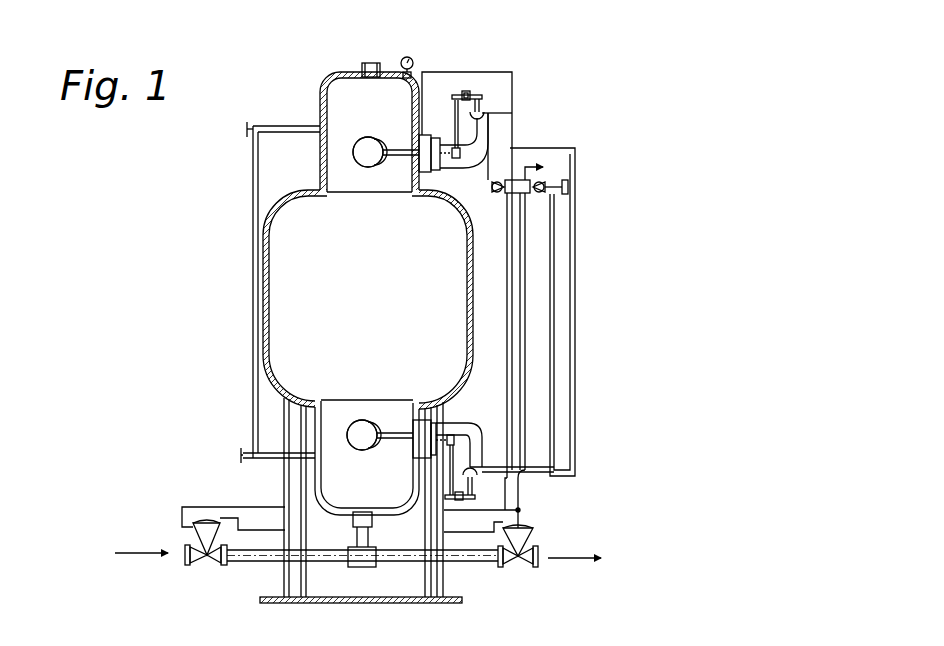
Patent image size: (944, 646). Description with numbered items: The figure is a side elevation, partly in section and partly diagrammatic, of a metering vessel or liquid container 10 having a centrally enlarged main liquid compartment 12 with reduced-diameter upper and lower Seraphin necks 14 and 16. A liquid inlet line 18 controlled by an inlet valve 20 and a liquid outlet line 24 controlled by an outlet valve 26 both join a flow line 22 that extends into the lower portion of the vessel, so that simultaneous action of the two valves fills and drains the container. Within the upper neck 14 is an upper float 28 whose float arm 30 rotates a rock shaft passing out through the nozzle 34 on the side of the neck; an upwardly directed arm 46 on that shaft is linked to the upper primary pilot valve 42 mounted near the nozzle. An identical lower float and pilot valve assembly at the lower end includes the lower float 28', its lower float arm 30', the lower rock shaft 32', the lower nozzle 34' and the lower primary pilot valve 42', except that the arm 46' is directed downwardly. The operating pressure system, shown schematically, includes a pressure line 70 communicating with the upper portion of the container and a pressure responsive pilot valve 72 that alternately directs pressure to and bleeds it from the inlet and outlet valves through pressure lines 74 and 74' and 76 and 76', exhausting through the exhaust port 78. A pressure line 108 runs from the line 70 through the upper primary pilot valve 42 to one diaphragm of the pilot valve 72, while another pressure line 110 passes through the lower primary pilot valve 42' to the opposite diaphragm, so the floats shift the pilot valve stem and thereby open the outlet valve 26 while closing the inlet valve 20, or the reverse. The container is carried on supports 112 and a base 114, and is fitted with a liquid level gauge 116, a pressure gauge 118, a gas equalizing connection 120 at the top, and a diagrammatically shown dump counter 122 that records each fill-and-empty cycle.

The metering vessel 10 is at (381, 276).
The main liquid compartment 12 is at (382, 299).
The upper Seraphin neck 14 is at (322, 88).
The lower Seraphin neck 16 is at (312, 474).
The liquid inlet line 18 is at (136, 550).
The inlet valve 20 is at (200, 575).
The flow line 22 is at (348, 540).
The liquid outlet line 24 is at (467, 567).
The outlet valve 26 is at (540, 555).
The upper float 28 is at (366, 193).
The lower float 28' is at (361, 458).
The float arm 30 is at (386, 131).
The lower float arm 30' is at (380, 405).
The lower rock shaft 32' is at (456, 382).
The upper nozzle 34 is at (443, 164).
The lower nozzle 34' is at (426, 402).
The upper primary pilot valve 42 is at (472, 123).
The lower primary pilot valve 42' is at (495, 459).
The upwardly directed arm 46 is at (455, 119).
The downwardly directed arm 46' is at (466, 451).
The pressure line 70 is at (467, 72).
The pressure responsive pilot valve 72 is at (518, 180).
The pressure line 74 is at (397, 362).
The pressure line 74' is at (573, 514).
The pressure line 76 is at (489, 335).
The pressure line 76' is at (394, 577).
The exhaust port 78 is at (542, 312).
The pressure line 108 is at (512, 115).
The pressure line 110 is at (575, 340).
The supports 112 is at (284, 572).
The base 114 is at (383, 604).
The liquid level gauge 116 is at (253, 196).
The pressure gauge 118 is at (406, 57).
The gas equalizing connection 120 is at (364, 63).
The dump counter 122 is at (568, 187).